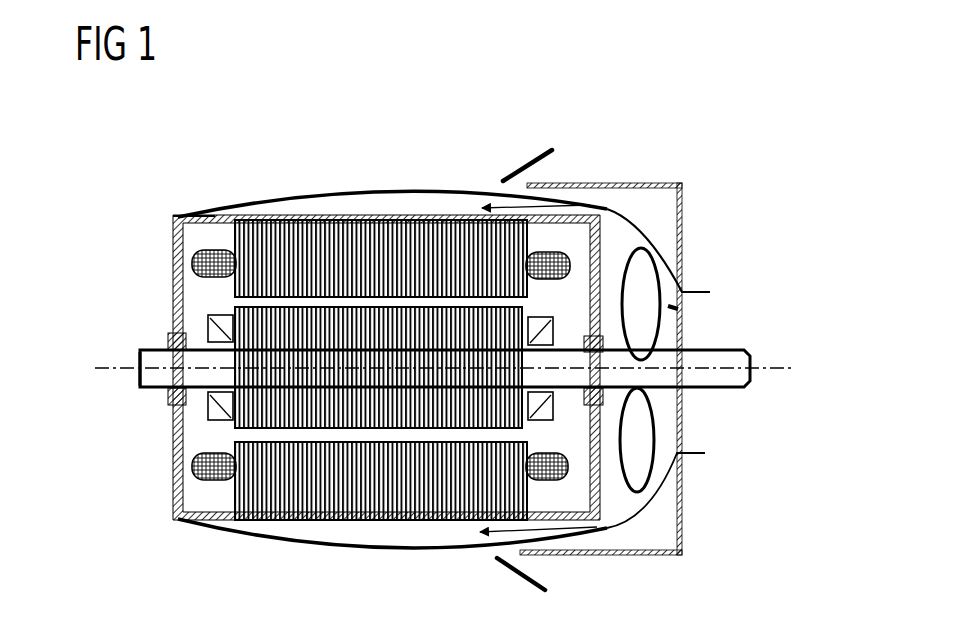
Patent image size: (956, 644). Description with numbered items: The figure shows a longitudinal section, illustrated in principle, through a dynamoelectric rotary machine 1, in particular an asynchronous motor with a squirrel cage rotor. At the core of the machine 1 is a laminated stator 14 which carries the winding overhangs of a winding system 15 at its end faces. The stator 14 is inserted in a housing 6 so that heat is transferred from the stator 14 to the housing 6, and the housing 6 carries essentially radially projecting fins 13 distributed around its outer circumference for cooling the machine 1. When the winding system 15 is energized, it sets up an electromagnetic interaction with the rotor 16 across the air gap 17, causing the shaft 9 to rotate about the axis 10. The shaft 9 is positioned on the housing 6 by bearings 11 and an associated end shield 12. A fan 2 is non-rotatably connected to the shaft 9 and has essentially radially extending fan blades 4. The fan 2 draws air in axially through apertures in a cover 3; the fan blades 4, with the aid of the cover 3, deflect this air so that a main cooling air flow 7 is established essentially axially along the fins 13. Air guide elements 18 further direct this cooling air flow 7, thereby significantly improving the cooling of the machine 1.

The dynamoelectric rotary machine 1 is at (319, 140).
The fan 2 is at (678, 313).
The cover 3 is at (683, 500).
The fan blades 4 is at (635, 262).
The housing 6 is at (212, 262).
The main cooling air flow 7 is at (686, 296).
The shaft 9 is at (162, 388).
The axis 10 is at (780, 372).
The bearings 11 is at (172, 344).
The end shield 12 is at (176, 300).
The fins 13 is at (348, 550).
The stator 14 is at (366, 220).
The winding system 15 is at (181, 215).
The rotor 16 is at (405, 522).
The air gap 17 is at (243, 433).
The air guide elements 18 is at (526, 158).